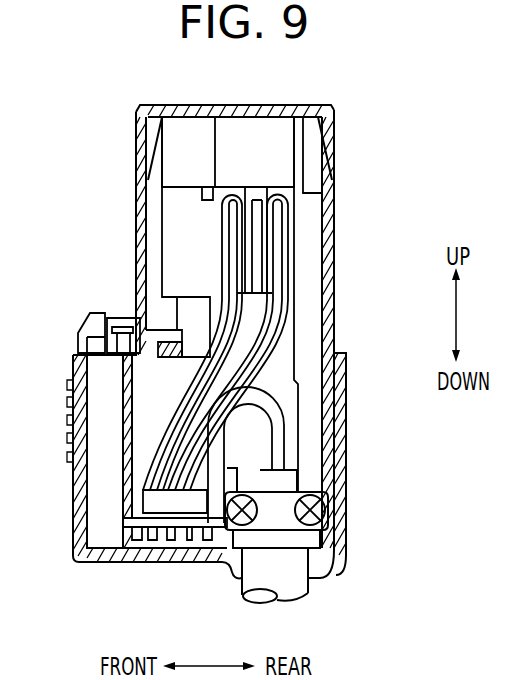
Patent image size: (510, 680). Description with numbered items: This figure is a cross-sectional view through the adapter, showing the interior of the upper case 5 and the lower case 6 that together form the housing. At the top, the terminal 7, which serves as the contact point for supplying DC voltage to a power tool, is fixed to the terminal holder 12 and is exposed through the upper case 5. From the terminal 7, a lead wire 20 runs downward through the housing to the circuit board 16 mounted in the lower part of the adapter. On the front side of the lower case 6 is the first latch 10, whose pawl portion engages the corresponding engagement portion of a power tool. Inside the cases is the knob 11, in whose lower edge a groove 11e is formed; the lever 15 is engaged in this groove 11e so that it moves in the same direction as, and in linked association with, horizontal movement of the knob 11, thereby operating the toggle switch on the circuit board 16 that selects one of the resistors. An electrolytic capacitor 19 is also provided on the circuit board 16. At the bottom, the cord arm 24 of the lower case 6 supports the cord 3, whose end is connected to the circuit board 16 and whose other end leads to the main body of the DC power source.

The cord 3 is at (293, 407).
The upper case 5 is at (334, 205).
The lower case 6 is at (347, 450).
The terminal 7 is at (250, 130).
The first latch 10 is at (80, 333).
The knob 11 is at (180, 330).
The groove 11e is at (137, 316).
The terminal holder 12 is at (326, 302).
The lever 15 is at (157, 358).
The circuit board 16 is at (187, 527).
The electrolytic capacitor 19 is at (163, 500).
The lead wire 20 is at (283, 237).
The cord arm 24 is at (306, 594).